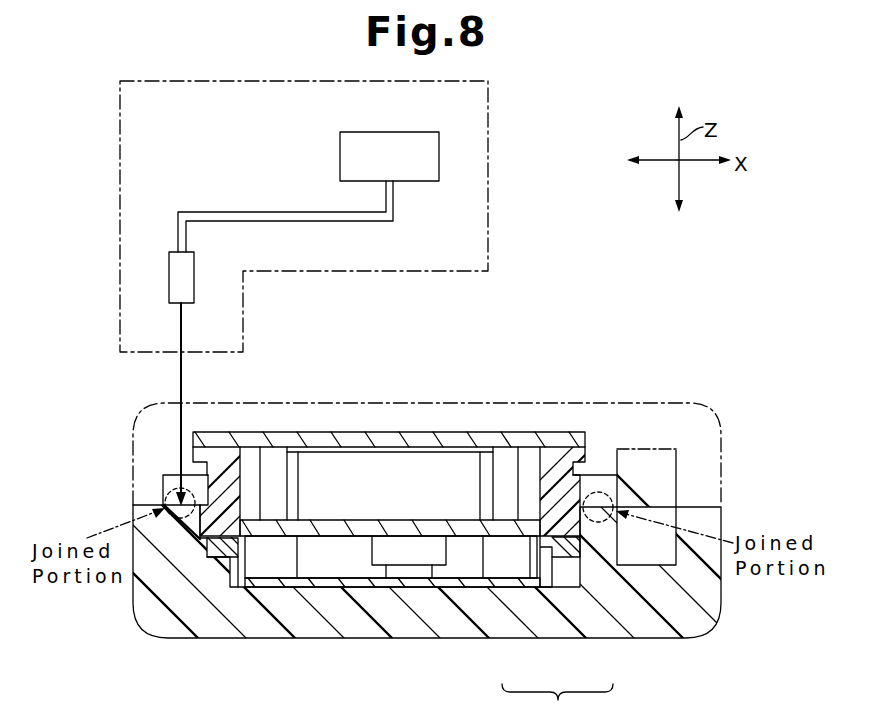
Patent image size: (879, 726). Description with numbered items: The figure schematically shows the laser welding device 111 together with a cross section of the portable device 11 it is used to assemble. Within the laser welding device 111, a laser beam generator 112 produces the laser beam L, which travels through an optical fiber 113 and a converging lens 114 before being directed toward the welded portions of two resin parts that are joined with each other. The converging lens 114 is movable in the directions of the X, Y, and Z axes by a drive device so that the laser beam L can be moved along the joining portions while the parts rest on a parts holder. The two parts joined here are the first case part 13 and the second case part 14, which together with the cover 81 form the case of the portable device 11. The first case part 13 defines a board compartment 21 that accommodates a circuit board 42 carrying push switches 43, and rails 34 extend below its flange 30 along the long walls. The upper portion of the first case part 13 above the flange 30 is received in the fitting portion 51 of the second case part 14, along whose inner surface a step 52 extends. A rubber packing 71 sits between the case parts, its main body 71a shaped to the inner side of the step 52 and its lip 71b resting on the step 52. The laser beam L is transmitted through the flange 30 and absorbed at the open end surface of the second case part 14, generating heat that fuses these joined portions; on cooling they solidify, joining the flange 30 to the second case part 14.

The portable device 11 is at (696, 383).
The first case part 13 is at (478, 432).
The second case part 14 is at (216, 638).
The board compartment 21 is at (400, 452).
The flange 30 is at (163, 480).
The rail 34 is at (203, 432).
The circuit board 42 is at (412, 520).
The push switch 43 is at (372, 550).
The fitting portion 51 is at (200, 545).
The step 52 is at (194, 567).
The packing 71 is at (557, 703).
The main body 71a is at (480, 588).
The lip 71b is at (583, 560).
The cover 81 is at (558, 402).
The laser welding device 111 is at (490, 110).
The laser beam generator 112 is at (389, 132).
The optical fiber 113 is at (283, 212).
The converging lens 114 is at (194, 264).
The laser beam L is at (178, 373).